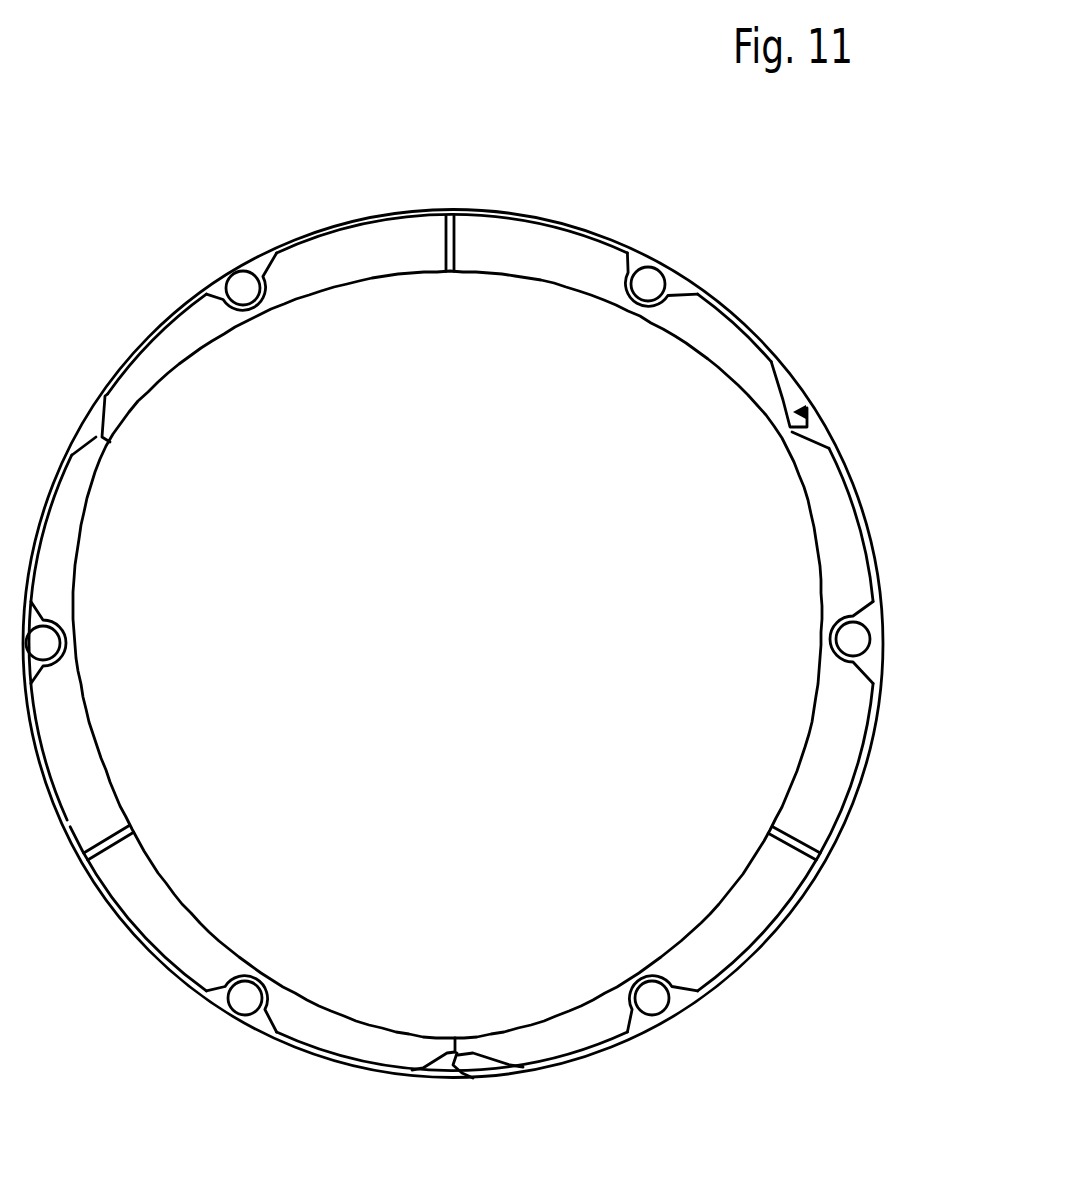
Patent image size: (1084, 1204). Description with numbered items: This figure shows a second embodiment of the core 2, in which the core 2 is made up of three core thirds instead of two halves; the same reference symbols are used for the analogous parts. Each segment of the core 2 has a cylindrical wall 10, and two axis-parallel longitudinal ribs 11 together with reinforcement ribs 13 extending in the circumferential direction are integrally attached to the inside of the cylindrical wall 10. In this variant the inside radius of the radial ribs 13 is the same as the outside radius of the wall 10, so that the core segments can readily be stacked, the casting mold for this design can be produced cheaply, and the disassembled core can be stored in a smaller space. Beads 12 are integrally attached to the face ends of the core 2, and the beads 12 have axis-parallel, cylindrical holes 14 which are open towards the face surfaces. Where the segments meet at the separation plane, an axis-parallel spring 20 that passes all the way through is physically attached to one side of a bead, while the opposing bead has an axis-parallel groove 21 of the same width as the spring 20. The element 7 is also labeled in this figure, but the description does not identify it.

The core 2 is at (570, 178).
The outer rim 7 is at (145, 300).
The cylindrical wall 10 is at (362, 213).
The longitudinal ribs 11 is at (458, 270).
The beads 12 is at (245, 268).
The reinforcement ribs 13 is at (68, 740).
The cylindrical holes 14 is at (256, 298).
The spring 20 is at (792, 400).
The groove 21 is at (806, 407).